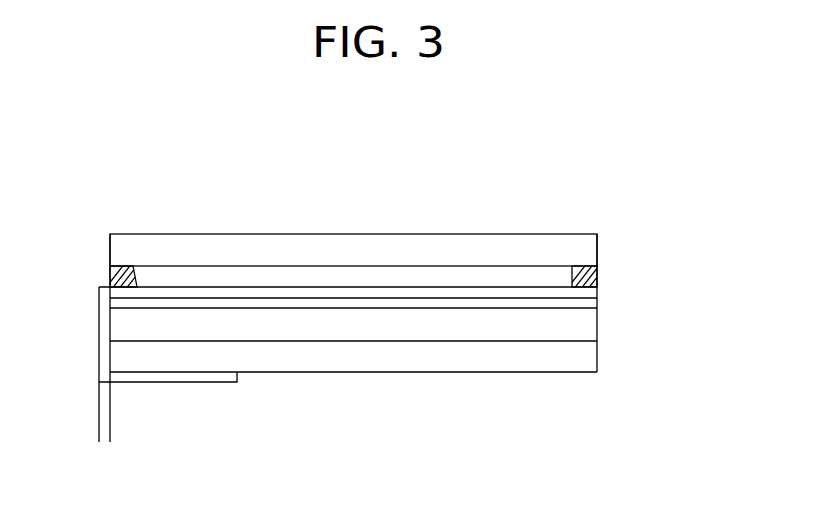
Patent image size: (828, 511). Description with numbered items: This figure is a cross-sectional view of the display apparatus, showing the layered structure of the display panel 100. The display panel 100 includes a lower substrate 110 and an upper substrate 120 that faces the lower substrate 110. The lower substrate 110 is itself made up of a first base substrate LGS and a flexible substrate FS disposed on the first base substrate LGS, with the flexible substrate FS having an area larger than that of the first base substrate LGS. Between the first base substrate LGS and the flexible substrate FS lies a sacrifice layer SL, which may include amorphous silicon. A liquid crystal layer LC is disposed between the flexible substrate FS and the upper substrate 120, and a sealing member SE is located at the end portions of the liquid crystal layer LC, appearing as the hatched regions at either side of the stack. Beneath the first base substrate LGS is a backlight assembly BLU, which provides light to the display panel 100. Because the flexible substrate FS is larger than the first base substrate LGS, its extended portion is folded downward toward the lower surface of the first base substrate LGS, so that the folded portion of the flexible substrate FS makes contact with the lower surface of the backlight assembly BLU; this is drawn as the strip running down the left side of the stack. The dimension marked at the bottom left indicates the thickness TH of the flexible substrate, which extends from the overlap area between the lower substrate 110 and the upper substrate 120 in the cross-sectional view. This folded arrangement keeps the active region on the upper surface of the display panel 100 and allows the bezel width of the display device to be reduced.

The display panel 100 is at (439, 306).
The lower substrate 110 is at (414, 303).
The upper substrate 120 is at (588, 247).
The sealing member SE is at (600, 265).
The flexible substrate FS is at (593, 290).
The sacrifice layer SL is at (586, 299).
The first base substrate LGS is at (586, 322).
The backlight assembly BLU is at (586, 357).
The liquid crystal layer LC is at (493, 278).
The thickness of the flexible substrate TH is at (142, 437).